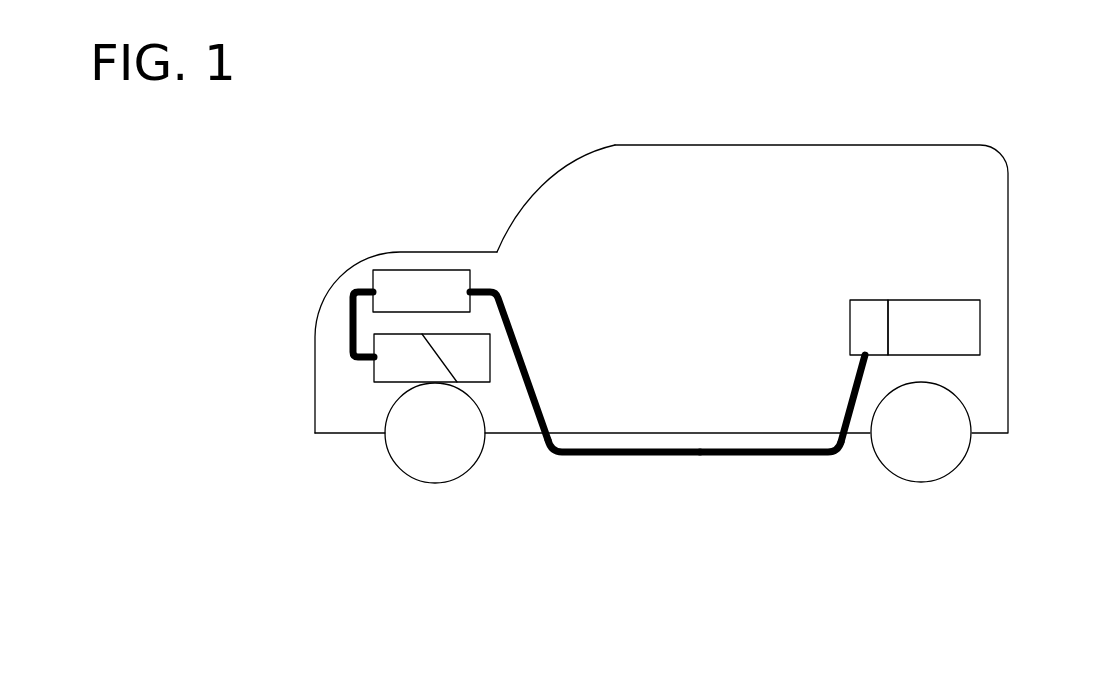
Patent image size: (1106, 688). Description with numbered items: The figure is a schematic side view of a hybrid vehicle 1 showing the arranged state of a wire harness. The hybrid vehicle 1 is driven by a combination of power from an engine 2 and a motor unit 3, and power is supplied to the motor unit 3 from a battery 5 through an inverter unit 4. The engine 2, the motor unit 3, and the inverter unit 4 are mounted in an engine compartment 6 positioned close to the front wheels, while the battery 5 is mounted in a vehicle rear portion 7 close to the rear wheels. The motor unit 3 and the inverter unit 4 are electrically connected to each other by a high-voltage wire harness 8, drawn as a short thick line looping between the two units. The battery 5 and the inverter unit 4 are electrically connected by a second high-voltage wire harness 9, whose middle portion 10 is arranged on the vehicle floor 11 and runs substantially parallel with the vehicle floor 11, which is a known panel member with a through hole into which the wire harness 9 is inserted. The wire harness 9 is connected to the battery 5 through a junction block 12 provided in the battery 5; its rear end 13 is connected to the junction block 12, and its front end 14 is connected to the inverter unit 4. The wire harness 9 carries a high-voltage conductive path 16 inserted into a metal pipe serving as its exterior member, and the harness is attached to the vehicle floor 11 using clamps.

The hybrid vehicle 1 is at (433, 164).
The engine 2 is at (475, 365).
The motor unit 3 is at (387, 368).
The inverter unit 4 is at (398, 283).
The battery 5 is at (938, 310).
The engine compartment 6 is at (332, 406).
The vehicle rear portion 7 is at (985, 378).
The high-voltage wire harness 8 is at (340, 314).
The high-voltage wire harness 9 is at (608, 460).
The middle portion 10 is at (706, 458).
The vehicle floor 11 is at (786, 433).
The junction block 12 is at (861, 310).
The rear end 13 is at (855, 372).
The front end 14 is at (497, 292).
The high-voltage conductive path 16 is at (482, 275).